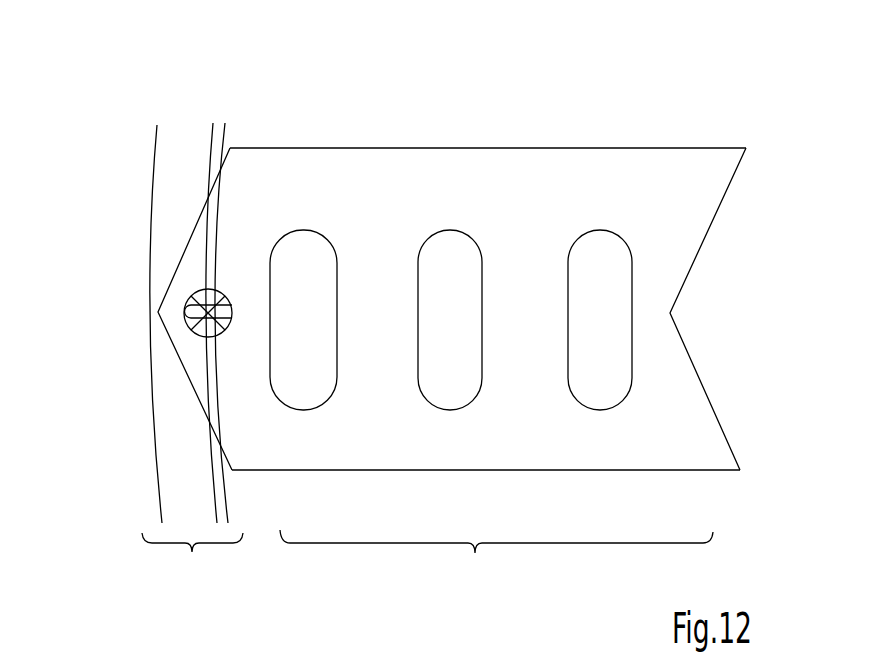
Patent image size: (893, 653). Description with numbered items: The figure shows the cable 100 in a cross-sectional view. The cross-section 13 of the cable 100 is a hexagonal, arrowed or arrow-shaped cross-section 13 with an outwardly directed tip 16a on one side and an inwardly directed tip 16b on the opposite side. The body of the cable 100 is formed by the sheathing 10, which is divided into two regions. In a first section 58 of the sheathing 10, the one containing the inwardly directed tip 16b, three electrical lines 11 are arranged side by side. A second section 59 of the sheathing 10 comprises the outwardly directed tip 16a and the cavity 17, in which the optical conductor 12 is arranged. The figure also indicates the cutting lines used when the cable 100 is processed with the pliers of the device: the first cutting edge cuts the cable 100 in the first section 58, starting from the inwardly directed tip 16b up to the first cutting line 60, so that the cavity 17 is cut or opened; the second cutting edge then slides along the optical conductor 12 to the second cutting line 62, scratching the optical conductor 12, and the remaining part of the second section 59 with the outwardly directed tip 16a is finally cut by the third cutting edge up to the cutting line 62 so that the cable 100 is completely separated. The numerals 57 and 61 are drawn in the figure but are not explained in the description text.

The cable 100 is at (745, 85).
The sheathing 10 is at (523, 453).
The electrical lines 11 is at (309, 230).
The optical conductor 12 is at (203, 303).
The cross-section 13 is at (686, 206).
The outwardly directed tip 16a is at (173, 347).
The inwardly directed tip 16b is at (690, 276).
The cavity 17 is at (187, 305).
The dimension 57 is at (207, 648).
The first section 58 is at (496, 555).
The second section 59 is at (192, 555).
The first cutting line 60 is at (225, 132).
The strip edge 61 is at (217, 498).
The second cutting line 62 is at (148, 183).